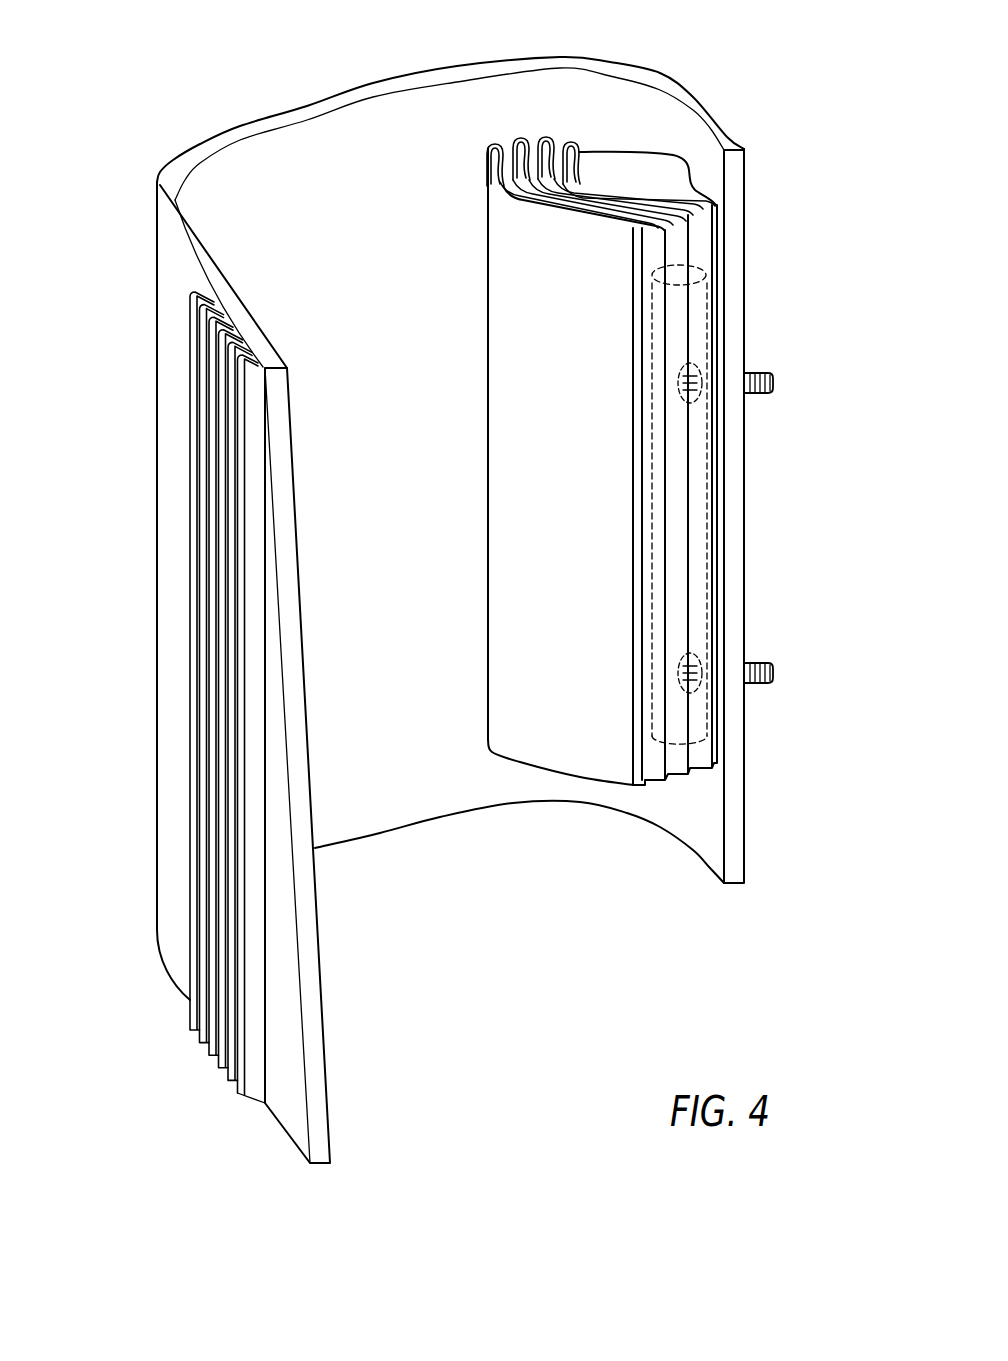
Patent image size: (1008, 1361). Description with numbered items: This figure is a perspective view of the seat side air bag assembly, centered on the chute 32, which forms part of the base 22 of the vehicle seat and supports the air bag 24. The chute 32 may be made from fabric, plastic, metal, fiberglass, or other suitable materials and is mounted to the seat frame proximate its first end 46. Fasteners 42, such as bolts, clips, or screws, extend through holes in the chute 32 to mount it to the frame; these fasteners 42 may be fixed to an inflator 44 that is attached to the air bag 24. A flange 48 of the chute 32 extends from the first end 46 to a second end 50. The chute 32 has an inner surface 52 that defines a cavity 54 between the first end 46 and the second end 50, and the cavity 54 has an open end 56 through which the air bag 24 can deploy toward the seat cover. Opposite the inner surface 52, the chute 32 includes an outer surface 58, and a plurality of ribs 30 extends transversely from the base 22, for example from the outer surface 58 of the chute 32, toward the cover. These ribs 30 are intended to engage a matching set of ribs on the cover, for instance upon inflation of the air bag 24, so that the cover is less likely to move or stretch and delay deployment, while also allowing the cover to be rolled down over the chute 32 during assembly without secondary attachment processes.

The base 22 is at (451, 595).
The air bag 24 is at (520, 345).
The plurality of ribs 30 is at (165, 693).
The chute 32 is at (157, 257).
The fasteners 42 is at (774, 385).
The inflator 44 is at (697, 303).
The first end 46 is at (733, 503).
The flange 48 is at (192, 394).
The second end 50 is at (307, 948).
The inner surface 52 is at (342, 156).
The cavity 54 is at (410, 705).
The open end 56 is at (485, 1079).
The outer surface 58 is at (186, 752).